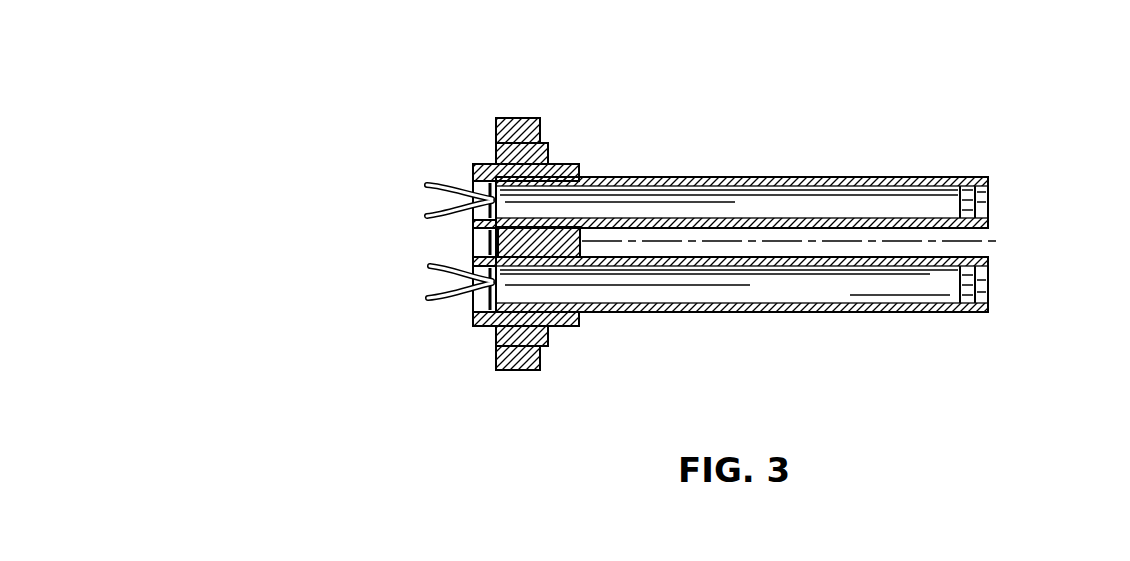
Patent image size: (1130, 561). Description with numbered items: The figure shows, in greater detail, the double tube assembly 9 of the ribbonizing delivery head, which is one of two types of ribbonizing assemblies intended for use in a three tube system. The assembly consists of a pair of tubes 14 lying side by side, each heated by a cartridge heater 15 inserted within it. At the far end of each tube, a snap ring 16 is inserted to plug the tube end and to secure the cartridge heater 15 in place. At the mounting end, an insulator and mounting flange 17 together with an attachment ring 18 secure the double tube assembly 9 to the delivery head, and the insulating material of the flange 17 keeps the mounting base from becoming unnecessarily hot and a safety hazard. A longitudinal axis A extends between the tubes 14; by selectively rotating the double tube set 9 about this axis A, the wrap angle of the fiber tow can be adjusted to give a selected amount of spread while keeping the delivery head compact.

The double tube assembly 9 is at (347, 198).
The tube 14 is at (473, 165).
The cartridge heater 15 is at (431, 217).
The snap ring 16 is at (988, 274).
The insulator and mounting flange 17 is at (581, 164).
The attachment ring 18 is at (519, 118).
The longitudinal axis A is at (842, 242).